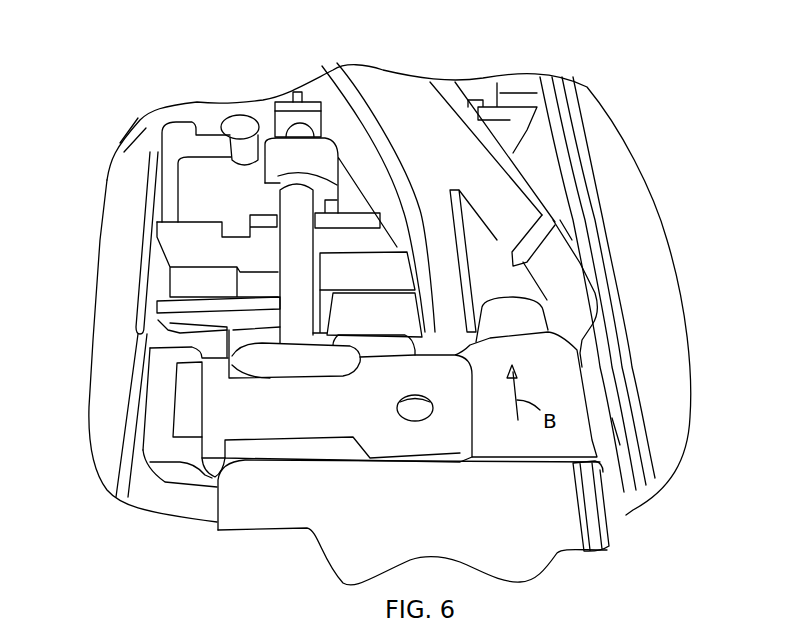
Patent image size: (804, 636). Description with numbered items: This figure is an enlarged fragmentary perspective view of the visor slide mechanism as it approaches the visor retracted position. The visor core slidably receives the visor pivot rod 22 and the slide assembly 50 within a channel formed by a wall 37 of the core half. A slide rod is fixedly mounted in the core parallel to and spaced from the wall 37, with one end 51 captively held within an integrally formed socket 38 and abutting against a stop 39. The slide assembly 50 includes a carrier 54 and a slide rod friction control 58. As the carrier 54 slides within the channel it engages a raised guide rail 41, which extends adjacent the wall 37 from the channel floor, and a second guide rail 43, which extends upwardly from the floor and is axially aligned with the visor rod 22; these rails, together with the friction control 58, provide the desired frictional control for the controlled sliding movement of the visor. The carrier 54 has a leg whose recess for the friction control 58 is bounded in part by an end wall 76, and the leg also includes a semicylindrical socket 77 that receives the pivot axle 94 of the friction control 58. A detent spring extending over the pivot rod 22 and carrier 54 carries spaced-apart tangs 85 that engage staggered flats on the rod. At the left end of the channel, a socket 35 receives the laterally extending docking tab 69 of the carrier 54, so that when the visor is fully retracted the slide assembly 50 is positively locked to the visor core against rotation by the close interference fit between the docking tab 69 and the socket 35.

The visor pivot rod 22 is at (518, 303).
The socket 35 is at (360, 305).
The wall 37 is at (147, 257).
The socket 38 is at (323, 153).
The stop 39 is at (302, 117).
The guide rail 41 is at (180, 332).
The second guide rail 43 is at (530, 207).
The slide assembly 50 is at (575, 330).
The end of slide rod 51 is at (298, 118).
The carrier 54 is at (606, 418).
The slide rod friction control 58 is at (210, 392).
The docking tab 69 is at (398, 342).
The end wall 76 is at (140, 433).
The semicylindrical socket 77 is at (247, 463).
The tangs 85 is at (573, 507).
The pivot axle 94 is at (210, 448).